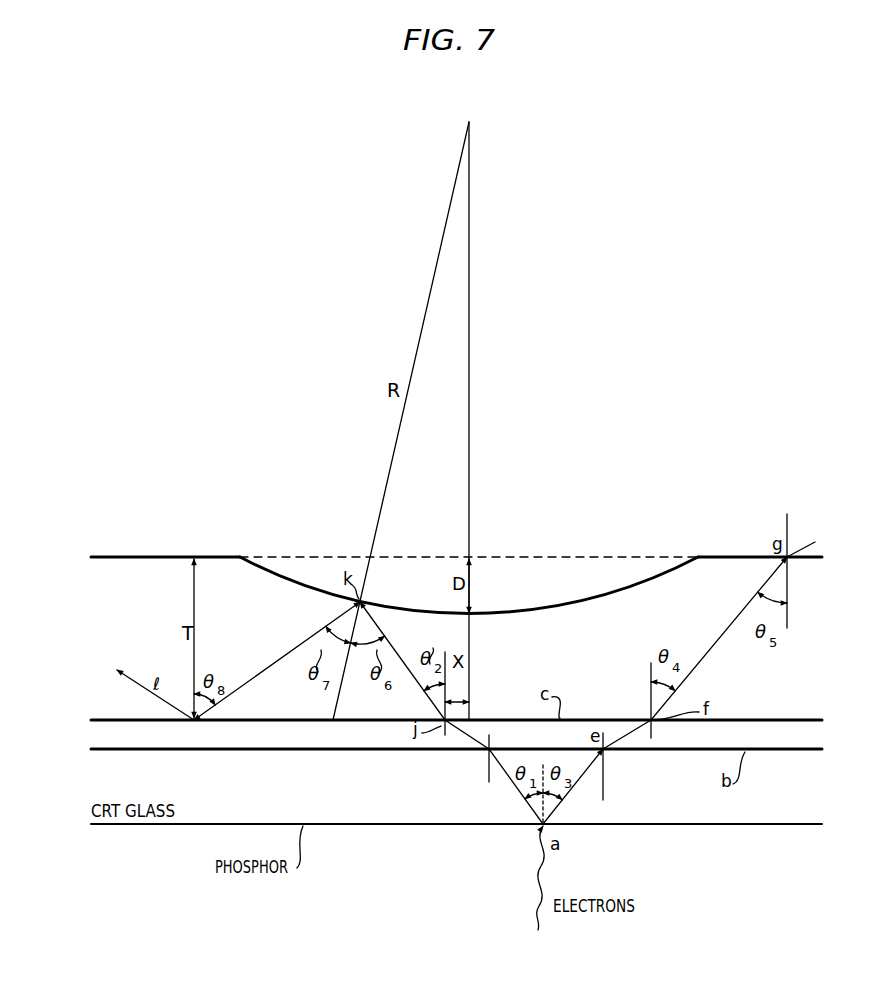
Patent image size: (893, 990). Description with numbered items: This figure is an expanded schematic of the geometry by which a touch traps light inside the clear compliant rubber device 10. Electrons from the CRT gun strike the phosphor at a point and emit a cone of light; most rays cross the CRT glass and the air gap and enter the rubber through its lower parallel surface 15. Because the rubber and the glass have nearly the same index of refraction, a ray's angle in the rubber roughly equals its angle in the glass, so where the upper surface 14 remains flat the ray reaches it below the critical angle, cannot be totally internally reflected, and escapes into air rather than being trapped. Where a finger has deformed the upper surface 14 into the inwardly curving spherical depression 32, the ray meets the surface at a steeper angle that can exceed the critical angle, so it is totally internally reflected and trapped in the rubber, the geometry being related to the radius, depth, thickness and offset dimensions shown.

The device 10 is at (232, 618).
The upper surface 14 is at (175, 554).
The inwardly curving surface 32 is at (597, 598).
The lower parallel surface 15 is at (740, 718).